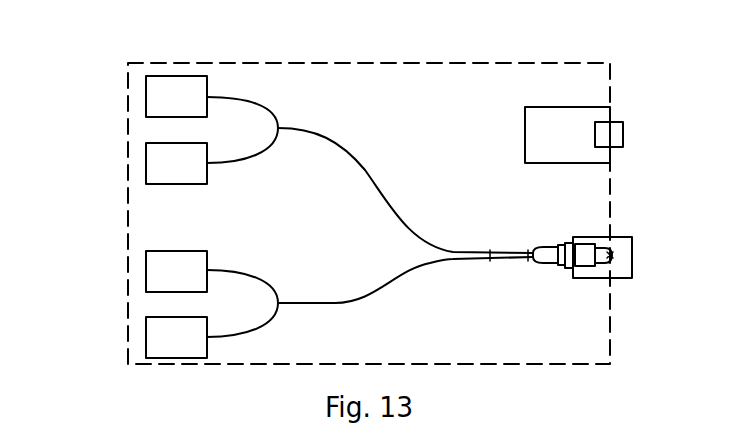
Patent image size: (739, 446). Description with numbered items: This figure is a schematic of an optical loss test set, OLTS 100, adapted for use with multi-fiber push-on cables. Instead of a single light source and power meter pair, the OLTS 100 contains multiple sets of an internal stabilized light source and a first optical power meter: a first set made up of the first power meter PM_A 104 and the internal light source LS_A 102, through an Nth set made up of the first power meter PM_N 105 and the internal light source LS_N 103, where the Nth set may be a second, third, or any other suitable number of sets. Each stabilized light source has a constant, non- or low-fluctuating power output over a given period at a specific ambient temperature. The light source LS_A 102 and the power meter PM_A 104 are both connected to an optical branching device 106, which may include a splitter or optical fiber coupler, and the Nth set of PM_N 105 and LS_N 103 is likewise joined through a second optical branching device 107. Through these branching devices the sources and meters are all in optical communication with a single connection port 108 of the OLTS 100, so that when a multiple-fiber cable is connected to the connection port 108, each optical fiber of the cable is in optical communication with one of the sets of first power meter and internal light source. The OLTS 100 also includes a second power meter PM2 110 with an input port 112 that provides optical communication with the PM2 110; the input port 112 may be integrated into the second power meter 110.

The first OLTS 100 is at (492, 63).
The internal stabilized light source LS_A 102 is at (155, 175).
The internal light source LS_N 103 is at (150, 345).
The first power meter PM_A 104 is at (148, 82).
The first power meter PM_N 105 is at (148, 272).
The optical branching device 106 is at (252, 102).
The optical branching device 107 is at (240, 273).
The connection port 108 is at (592, 274).
The second power meter PM2 110 is at (540, 125).
The input port 112 is at (615, 138).